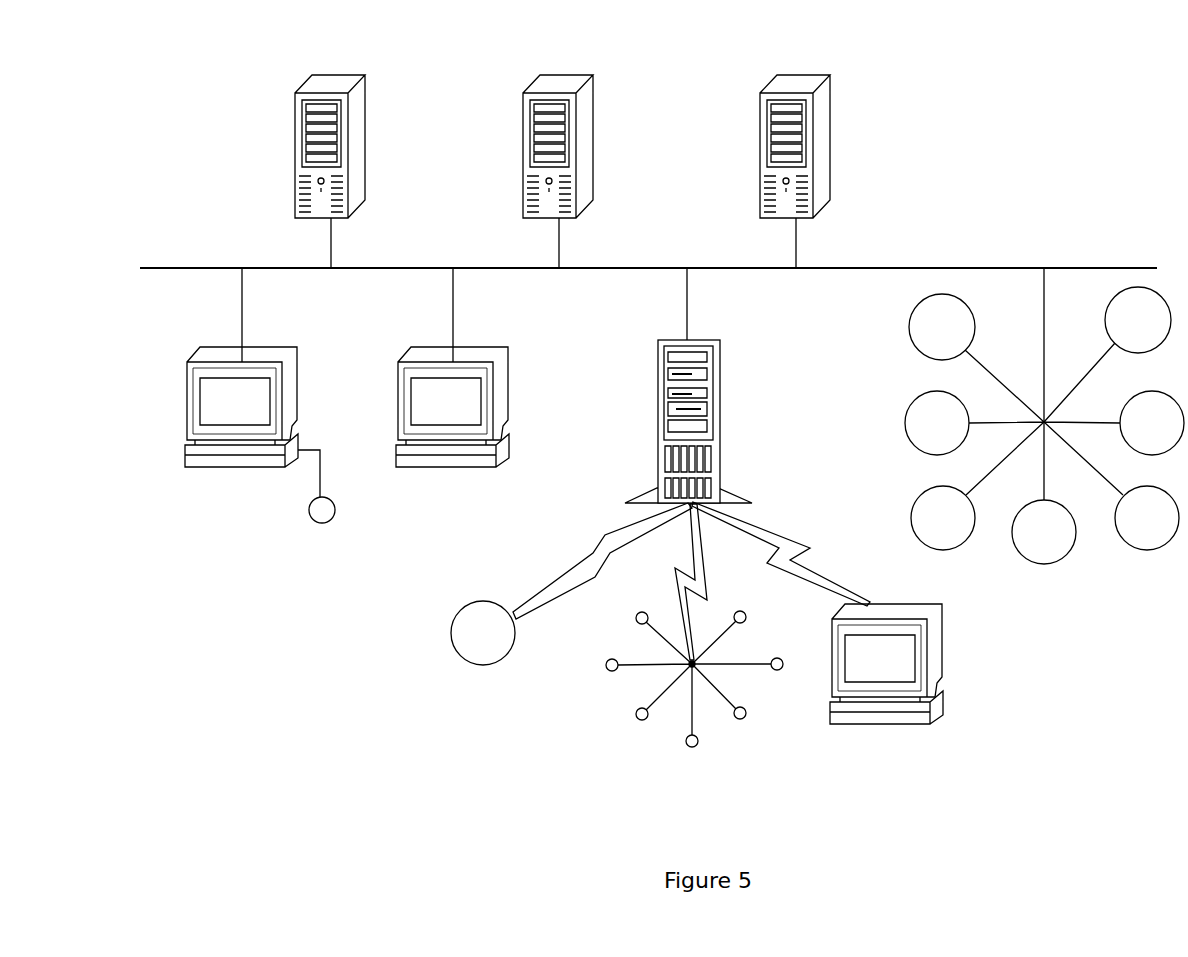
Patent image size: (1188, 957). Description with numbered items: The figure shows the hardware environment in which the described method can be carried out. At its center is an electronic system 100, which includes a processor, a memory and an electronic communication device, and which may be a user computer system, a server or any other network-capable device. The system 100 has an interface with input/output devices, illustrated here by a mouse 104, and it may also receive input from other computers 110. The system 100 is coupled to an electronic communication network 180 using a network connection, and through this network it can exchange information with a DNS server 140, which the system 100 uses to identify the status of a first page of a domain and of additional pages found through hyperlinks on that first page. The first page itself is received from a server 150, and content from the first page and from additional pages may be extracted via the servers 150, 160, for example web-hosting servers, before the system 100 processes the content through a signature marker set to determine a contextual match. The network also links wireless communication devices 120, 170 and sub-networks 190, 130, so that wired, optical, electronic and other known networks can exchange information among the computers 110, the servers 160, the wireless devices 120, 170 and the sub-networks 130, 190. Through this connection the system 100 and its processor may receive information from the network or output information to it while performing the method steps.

The electronic system 100 is at (241, 394).
The mouse 104 is at (319, 505).
The computer 110 is at (452, 394).
The wireless communication device 120 is at (483, 656).
The sub-network 130 is at (1044, 445).
The DNS server 140 is at (330, 151).
The server 150 is at (558, 152).
The server 160 is at (795, 152).
The wireless communication device 170 is at (886, 691).
The electronic communication network 180 is at (707, 385).
The sub-network 190 is at (694, 702).